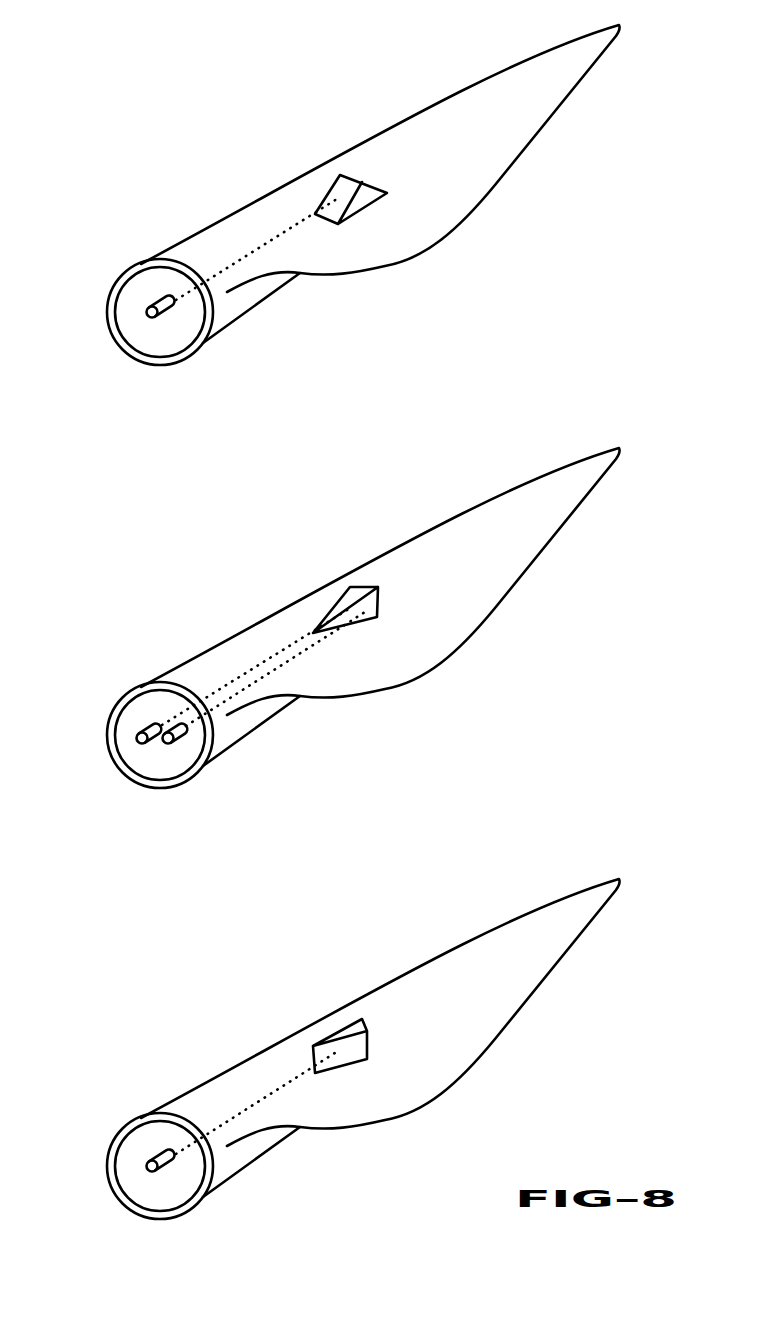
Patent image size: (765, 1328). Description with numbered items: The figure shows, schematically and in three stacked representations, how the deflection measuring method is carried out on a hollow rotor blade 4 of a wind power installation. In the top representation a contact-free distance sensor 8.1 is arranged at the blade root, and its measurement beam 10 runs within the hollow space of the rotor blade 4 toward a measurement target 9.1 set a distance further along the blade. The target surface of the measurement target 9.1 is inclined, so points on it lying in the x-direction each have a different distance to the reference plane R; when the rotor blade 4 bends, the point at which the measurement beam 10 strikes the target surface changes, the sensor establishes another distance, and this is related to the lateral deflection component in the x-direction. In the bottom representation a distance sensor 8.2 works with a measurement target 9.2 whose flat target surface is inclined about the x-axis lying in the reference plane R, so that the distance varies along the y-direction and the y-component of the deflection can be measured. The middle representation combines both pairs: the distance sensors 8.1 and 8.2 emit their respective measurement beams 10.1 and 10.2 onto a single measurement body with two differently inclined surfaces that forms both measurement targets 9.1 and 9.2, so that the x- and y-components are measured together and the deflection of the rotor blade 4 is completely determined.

The rotor blade 4 is at (488, 193).
The reference plane R is at (153, 345).
The distance sensor 8.1 is at (153, 303).
The distance sensor 8.2 is at (180, 741).
The measurement beam 10 is at (235, 262).
The measurement beam 10.1 is at (238, 677).
The measurement beam 10.2 is at (258, 680).
The measurement target 9.1 is at (340, 176).
The measurement target 9.2 is at (372, 617).